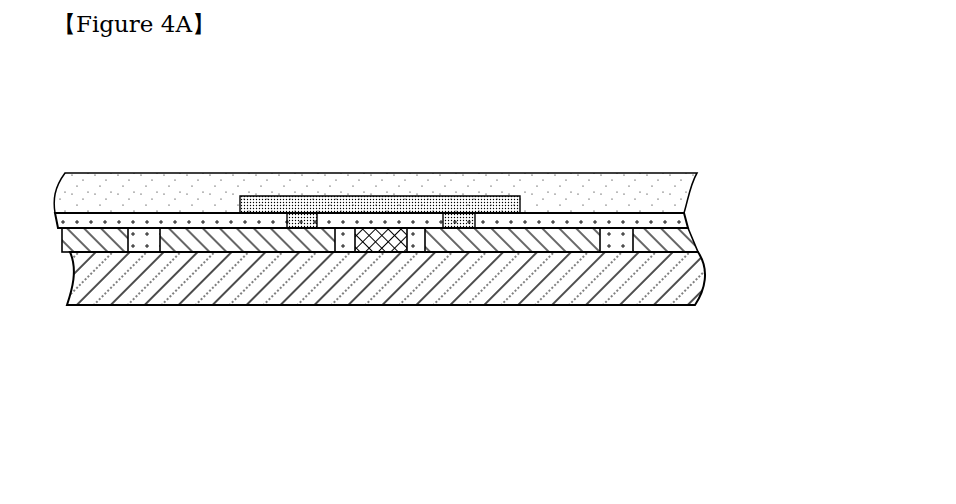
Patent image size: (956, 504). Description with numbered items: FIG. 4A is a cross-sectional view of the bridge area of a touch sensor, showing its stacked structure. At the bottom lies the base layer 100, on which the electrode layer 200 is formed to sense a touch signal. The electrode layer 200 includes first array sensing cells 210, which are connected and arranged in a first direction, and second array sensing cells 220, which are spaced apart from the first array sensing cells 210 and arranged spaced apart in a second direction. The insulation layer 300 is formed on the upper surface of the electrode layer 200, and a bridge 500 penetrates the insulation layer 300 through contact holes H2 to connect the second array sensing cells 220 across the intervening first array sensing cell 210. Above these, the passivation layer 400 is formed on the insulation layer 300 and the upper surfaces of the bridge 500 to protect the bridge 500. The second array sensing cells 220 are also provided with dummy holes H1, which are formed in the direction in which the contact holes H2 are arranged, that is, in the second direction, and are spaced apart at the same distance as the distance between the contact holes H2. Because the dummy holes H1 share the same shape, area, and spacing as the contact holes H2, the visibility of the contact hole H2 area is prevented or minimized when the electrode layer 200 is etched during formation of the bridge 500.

The base layer 100 is at (690, 280).
The electrode layer 200 is at (380, 357).
The first array sensing cells 210 is at (380, 250).
The second array sensing cells 220 is at (505, 250).
The insulation layer 300 is at (677, 220).
The passivation layer 400 is at (672, 193).
The bridge 500 is at (380, 195).
The dummy holes H1 is at (150, 243).
The contact holes H2 is at (297, 217).